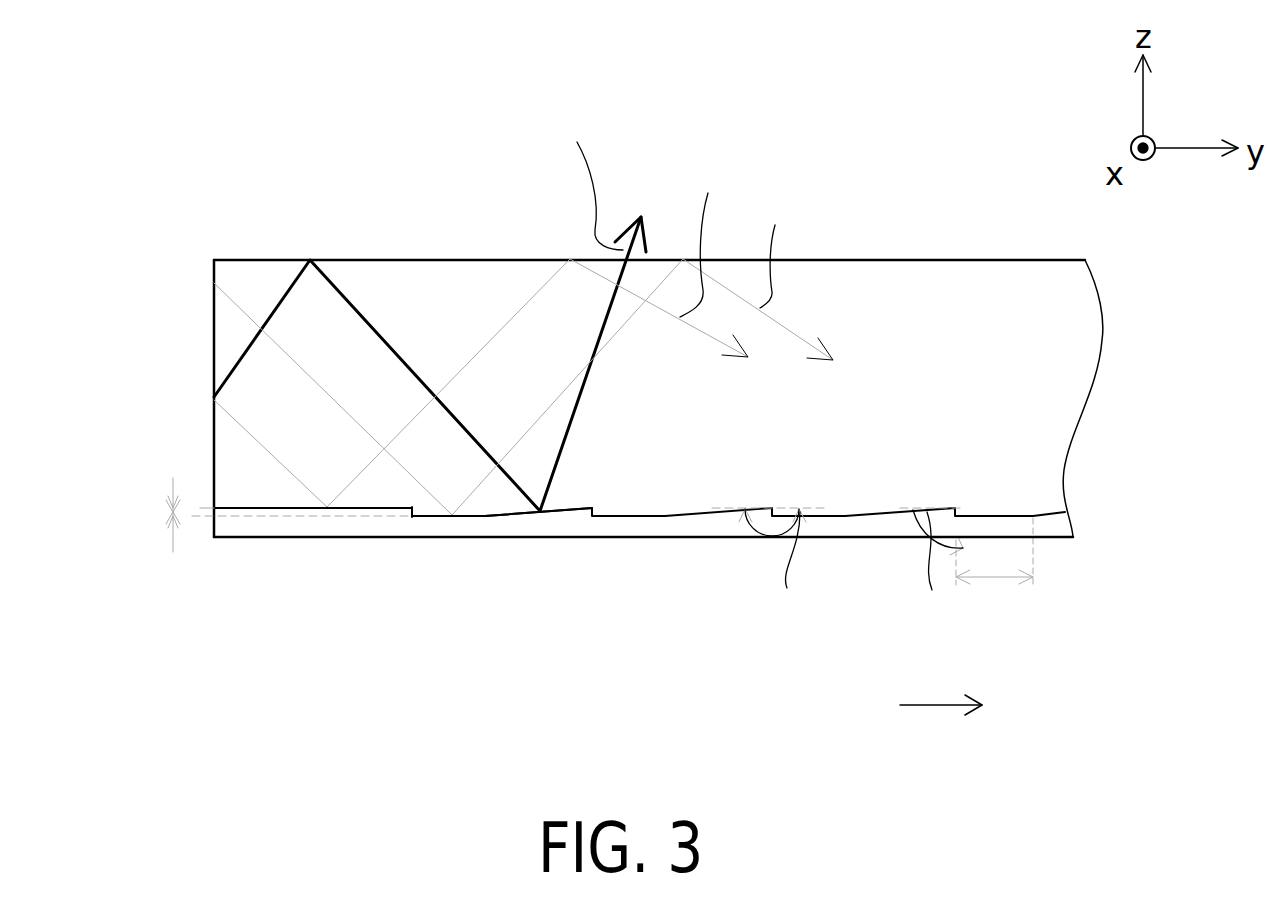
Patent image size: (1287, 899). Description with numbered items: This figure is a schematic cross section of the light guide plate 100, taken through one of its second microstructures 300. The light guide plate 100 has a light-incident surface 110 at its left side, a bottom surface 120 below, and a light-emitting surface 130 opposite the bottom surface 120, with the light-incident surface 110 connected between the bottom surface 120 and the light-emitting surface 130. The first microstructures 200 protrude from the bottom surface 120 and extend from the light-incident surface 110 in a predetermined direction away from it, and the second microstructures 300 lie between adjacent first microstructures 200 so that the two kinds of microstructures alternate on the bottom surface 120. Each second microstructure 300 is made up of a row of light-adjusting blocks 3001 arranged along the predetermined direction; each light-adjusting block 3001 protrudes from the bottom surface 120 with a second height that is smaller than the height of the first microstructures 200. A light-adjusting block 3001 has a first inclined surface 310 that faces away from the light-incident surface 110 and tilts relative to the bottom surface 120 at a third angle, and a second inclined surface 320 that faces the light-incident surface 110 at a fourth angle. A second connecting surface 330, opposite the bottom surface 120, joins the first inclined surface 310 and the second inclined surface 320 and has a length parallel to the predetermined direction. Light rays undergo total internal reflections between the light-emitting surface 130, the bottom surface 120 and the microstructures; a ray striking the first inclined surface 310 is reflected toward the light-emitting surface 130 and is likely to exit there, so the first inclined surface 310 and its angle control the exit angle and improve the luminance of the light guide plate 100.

The light guide plate 100 is at (185, 130).
The light-incident surface 110 is at (214, 325).
The bottom surface 120 is at (242, 510).
The light-emitting surface 130 is at (377, 258).
The first microstructures 200 is at (313, 540).
The second microstructures 300 is at (585, 673).
The light-adjusting block 3001 is at (465, 633).
The first inclined surface 310 is at (527, 512).
The second inclined surface 320 is at (407, 509).
The second connecting surface 330 is at (473, 515).